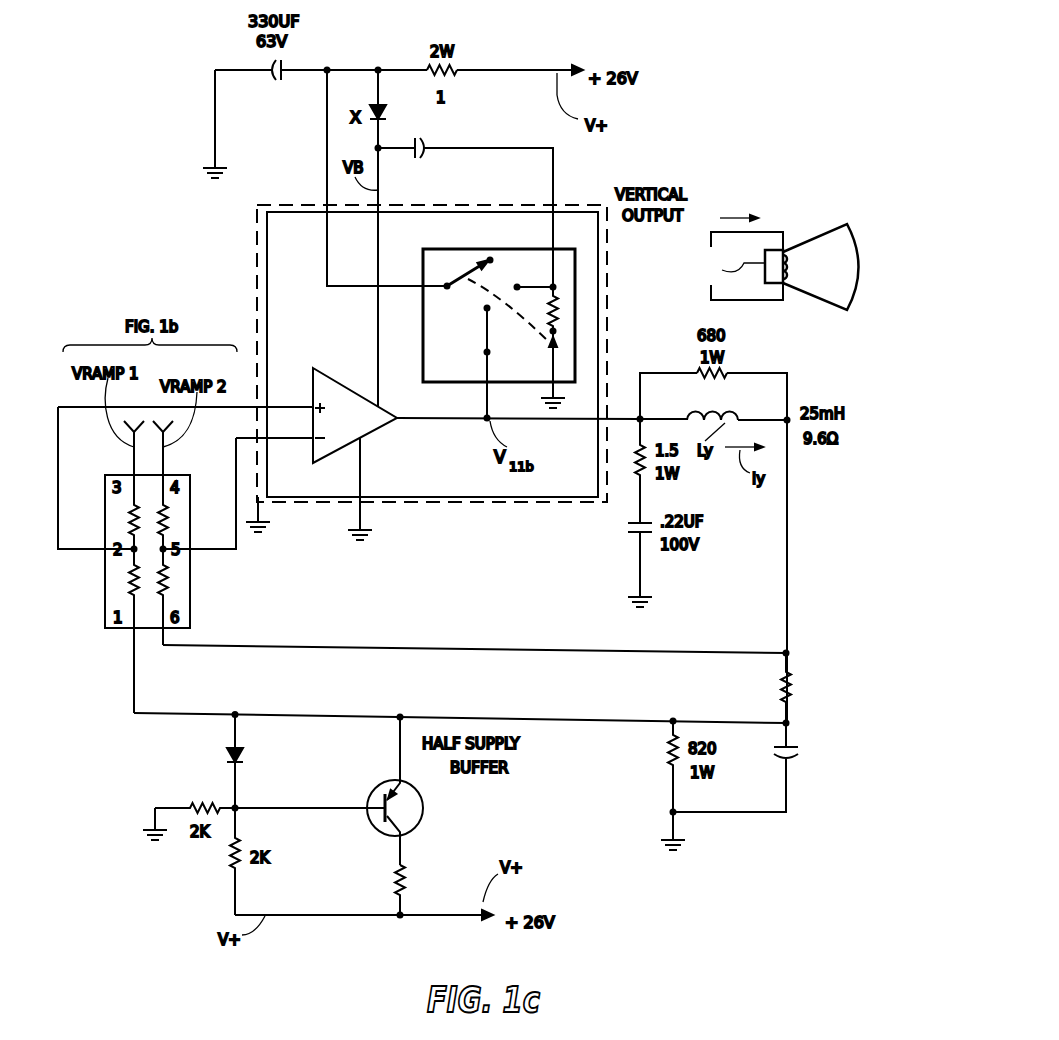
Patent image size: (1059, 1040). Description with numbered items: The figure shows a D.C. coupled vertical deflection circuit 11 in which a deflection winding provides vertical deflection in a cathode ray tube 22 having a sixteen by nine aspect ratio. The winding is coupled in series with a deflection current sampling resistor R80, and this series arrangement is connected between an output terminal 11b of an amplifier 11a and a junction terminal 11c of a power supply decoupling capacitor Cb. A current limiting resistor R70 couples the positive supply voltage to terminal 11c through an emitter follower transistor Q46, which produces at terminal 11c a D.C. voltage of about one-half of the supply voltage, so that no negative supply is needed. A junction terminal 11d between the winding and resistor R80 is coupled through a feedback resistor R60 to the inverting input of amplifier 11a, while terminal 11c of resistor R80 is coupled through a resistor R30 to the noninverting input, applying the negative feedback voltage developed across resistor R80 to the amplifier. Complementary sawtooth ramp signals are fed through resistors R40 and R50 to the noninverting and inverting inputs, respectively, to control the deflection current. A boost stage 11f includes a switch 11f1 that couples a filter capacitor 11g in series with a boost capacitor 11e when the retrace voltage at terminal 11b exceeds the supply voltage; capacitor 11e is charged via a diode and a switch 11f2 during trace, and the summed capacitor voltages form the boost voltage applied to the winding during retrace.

The deflection circuit 11 is at (450, 627).
The amplifier 11a is at (338, 450).
The output terminal 11b is at (638, 425).
The junction terminal 11c is at (786, 720).
The junction terminal 11d is at (790, 650).
The boost capacitor 11e is at (425, 141).
The boost stage 11f is at (540, 298).
The switch 11f1 is at (490, 257).
The switch 11f2 is at (556, 347).
The filter capacitor 11g is at (272, 82).
The cathode ray tube 22 is at (862, 280).
The resistor R30 is at (130, 585).
The resistor R40 is at (130, 515).
The resistor R50 is at (168, 516).
The feedback resistor R60 is at (168, 584).
The current limiting resistor R70 is at (408, 882).
The deflection current sampling resistor R80 is at (805, 688).
The emitter follower transistor Q46 is at (416, 791).
The power supply decoupling capacitor Cb is at (790, 758).